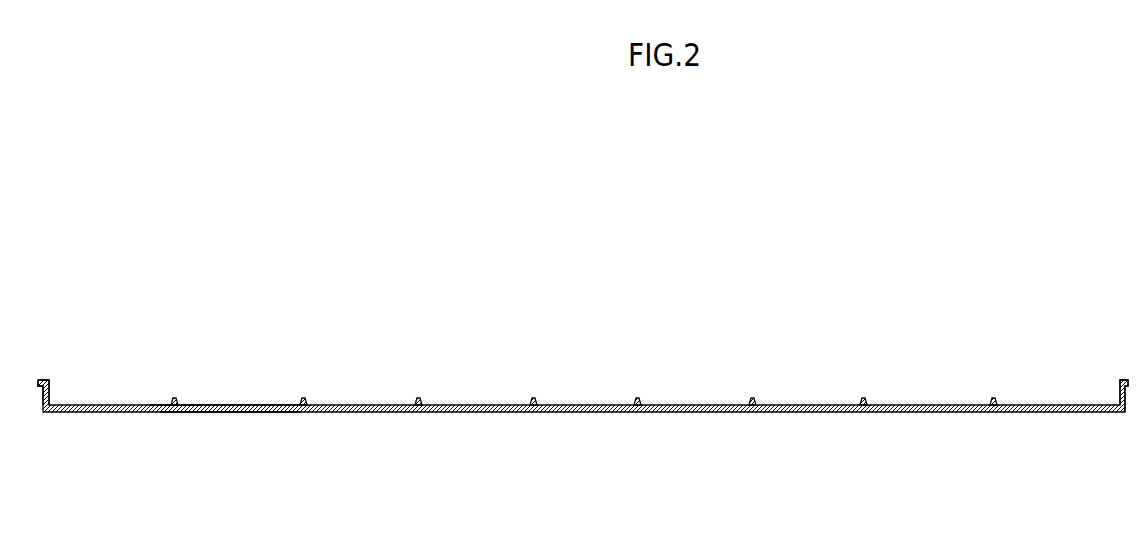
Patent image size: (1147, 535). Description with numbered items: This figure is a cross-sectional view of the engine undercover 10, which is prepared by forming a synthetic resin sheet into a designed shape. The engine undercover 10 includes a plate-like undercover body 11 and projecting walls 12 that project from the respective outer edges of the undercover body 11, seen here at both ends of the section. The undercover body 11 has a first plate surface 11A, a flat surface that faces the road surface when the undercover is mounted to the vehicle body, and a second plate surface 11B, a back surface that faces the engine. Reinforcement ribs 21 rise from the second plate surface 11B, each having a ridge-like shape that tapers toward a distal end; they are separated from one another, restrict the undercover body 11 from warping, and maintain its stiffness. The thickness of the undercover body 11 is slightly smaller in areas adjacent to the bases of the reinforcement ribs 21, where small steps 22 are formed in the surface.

The engine undercover 10 is at (305, 198).
The undercover body 11 is at (356, 405).
The first plate surface 11A is at (229, 412).
The second plate surface 11B is at (218, 405).
The projecting wall 12 is at (50, 388).
The reinforcement rib 21 is at (175, 398).
The small step 22 is at (157, 404).